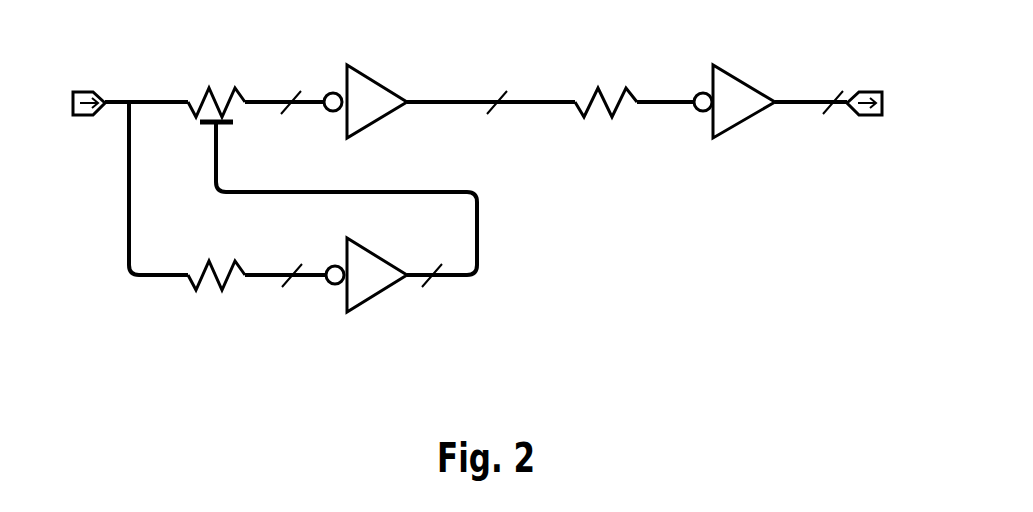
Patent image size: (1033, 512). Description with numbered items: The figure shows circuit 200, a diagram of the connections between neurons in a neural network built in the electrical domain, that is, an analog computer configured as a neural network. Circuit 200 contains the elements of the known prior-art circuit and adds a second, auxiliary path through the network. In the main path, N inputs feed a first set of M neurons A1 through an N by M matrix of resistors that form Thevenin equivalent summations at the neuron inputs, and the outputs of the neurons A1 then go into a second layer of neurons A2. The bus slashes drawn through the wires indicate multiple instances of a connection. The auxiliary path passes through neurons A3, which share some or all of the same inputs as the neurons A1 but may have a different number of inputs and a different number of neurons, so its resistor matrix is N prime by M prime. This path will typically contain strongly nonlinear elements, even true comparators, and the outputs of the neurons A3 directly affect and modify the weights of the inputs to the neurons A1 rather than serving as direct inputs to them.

The circuit 200 is at (690, 302).
The neurons A1 is at (395, 96).
The neurons A2 is at (764, 96).
The neurons A3 is at (368, 292).